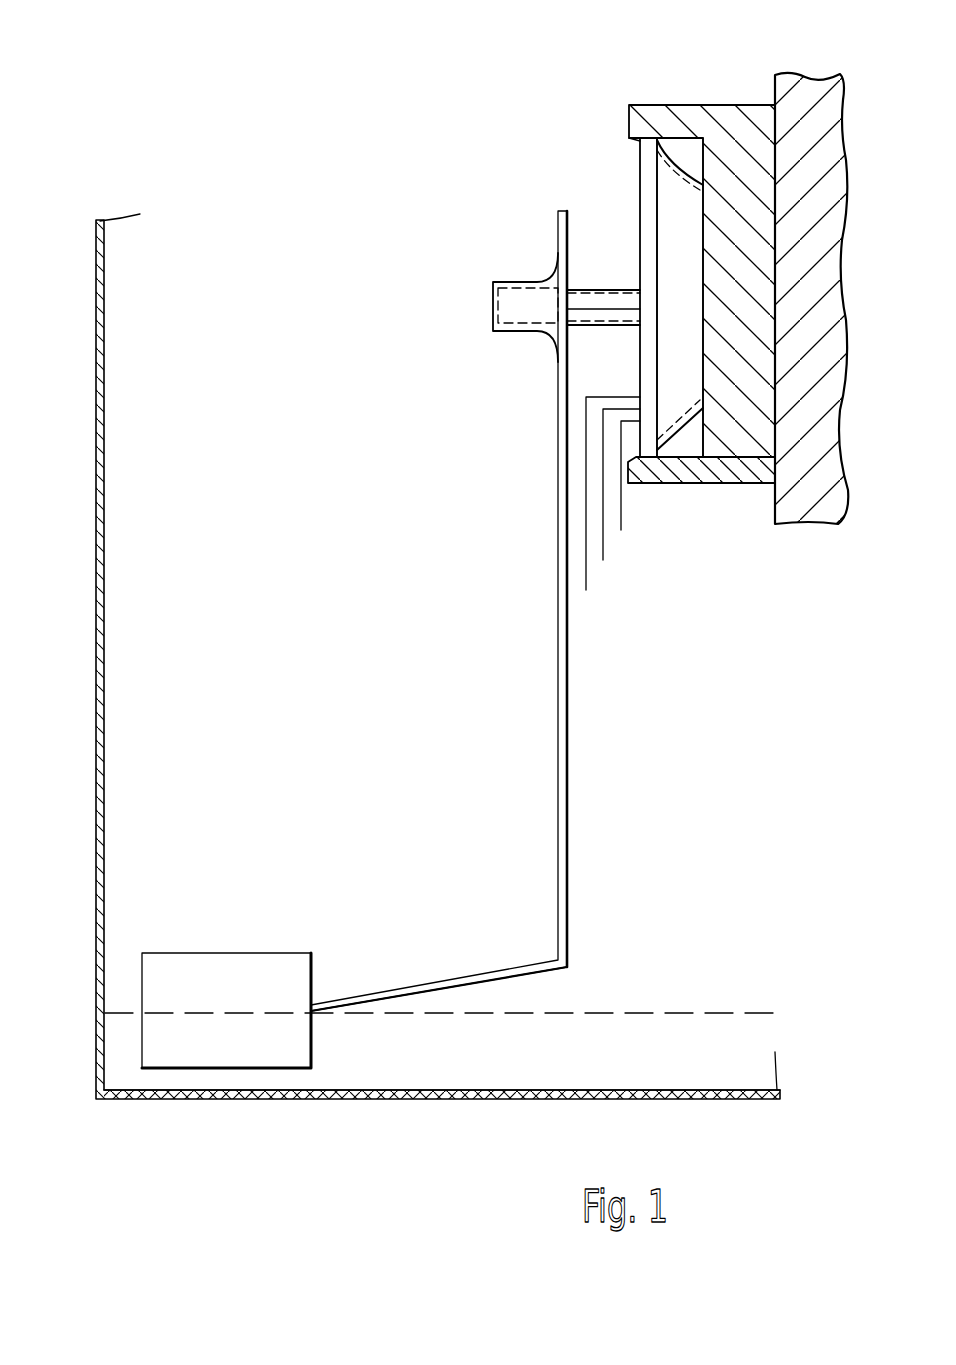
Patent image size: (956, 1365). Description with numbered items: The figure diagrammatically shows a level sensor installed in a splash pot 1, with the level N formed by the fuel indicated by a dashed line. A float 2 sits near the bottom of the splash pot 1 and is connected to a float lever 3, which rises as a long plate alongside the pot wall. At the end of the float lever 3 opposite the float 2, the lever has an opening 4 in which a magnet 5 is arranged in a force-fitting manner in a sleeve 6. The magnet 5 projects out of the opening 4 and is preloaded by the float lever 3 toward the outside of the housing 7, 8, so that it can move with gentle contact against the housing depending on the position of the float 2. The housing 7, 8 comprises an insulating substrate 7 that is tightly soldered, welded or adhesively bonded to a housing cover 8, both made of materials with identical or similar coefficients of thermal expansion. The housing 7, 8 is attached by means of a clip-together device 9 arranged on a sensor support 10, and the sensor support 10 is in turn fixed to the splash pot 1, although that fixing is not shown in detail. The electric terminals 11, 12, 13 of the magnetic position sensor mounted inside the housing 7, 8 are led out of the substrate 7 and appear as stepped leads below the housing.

The splash pot 1 is at (97, 612).
The float 2 is at (238, 1050).
The float lever 3 is at (563, 767).
The opening 4 is at (560, 304).
The magnet 5 is at (604, 300).
The sleeve 6 is at (517, 280).
The insulating substrate 7 is at (650, 150).
The housing cover 8 is at (673, 185).
The clip-together device 9 is at (633, 145).
The sensor support 10 is at (803, 110).
The electric terminal 11 is at (621, 515).
The electric terminal 12 is at (603, 545).
The electric terminal 13 is at (586, 576).
The level N is at (127, 1013).